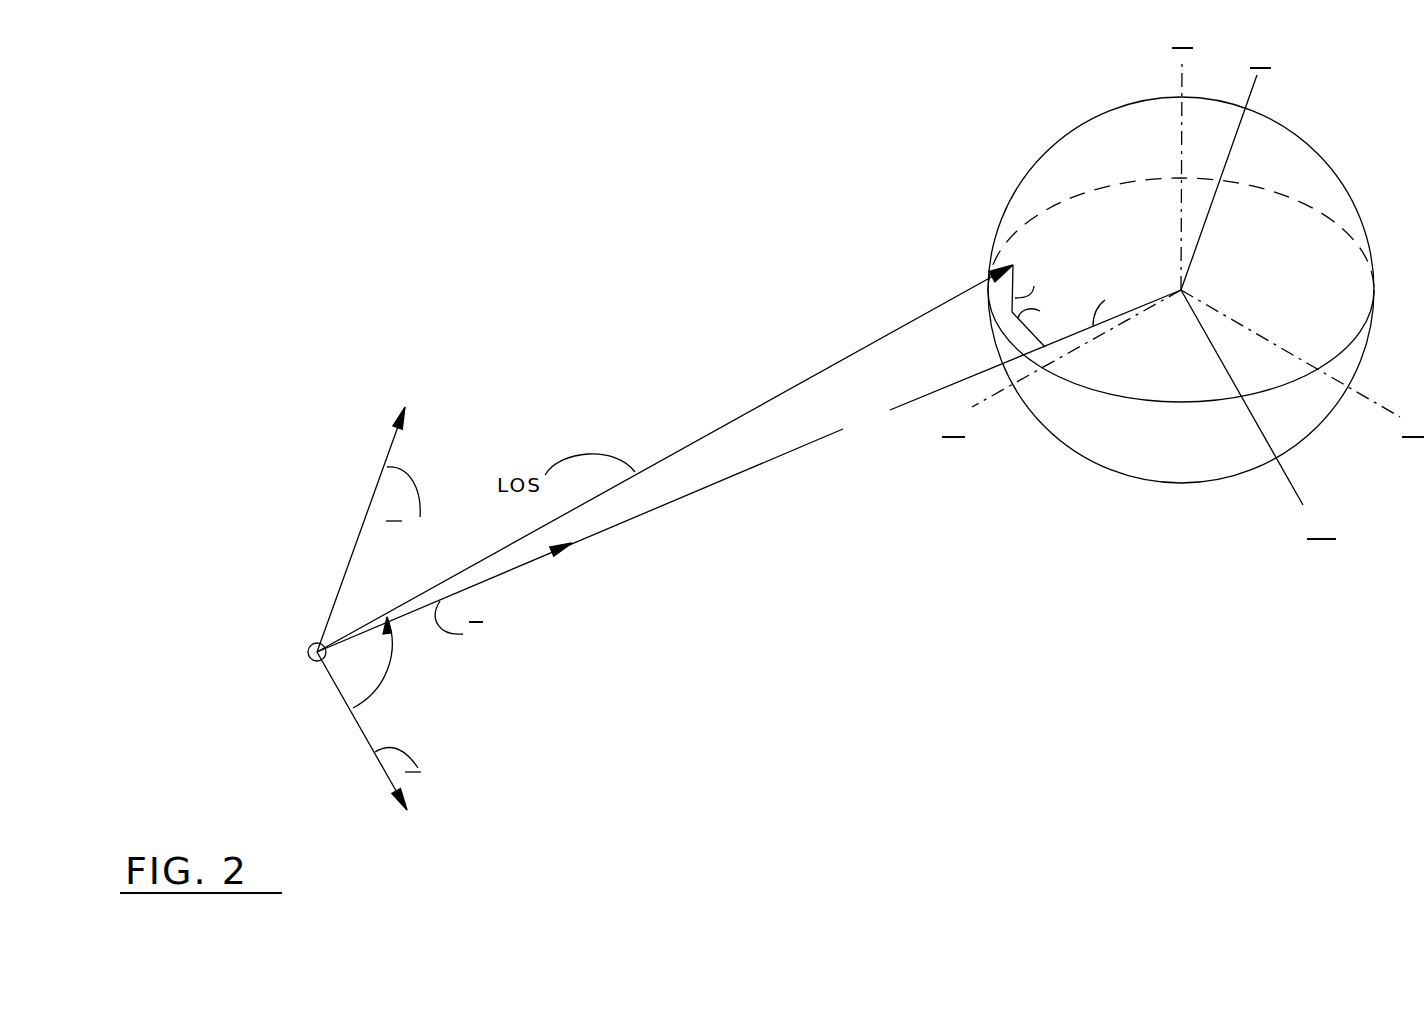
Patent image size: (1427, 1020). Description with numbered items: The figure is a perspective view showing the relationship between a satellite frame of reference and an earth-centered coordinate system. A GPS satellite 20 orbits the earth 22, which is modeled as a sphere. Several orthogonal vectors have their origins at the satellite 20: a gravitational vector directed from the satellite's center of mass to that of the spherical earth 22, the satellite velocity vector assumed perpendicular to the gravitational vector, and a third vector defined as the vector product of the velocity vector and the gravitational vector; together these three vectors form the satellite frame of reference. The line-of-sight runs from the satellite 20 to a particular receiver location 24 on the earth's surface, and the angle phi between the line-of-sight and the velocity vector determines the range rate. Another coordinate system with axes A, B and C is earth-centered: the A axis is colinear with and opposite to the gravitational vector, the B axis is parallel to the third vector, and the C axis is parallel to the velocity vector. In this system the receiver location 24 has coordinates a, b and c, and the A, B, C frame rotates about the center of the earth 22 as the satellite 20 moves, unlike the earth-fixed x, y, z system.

The GPS satellite 20 is at (303, 648).
The earth 22 is at (1277, 153).
The receiver location 24 is at (998, 247).